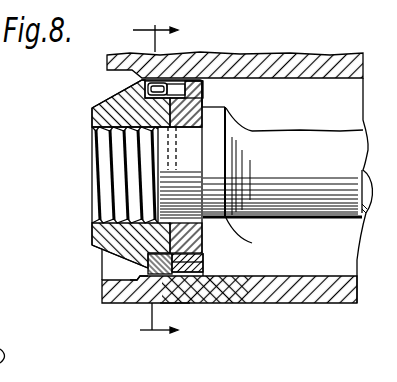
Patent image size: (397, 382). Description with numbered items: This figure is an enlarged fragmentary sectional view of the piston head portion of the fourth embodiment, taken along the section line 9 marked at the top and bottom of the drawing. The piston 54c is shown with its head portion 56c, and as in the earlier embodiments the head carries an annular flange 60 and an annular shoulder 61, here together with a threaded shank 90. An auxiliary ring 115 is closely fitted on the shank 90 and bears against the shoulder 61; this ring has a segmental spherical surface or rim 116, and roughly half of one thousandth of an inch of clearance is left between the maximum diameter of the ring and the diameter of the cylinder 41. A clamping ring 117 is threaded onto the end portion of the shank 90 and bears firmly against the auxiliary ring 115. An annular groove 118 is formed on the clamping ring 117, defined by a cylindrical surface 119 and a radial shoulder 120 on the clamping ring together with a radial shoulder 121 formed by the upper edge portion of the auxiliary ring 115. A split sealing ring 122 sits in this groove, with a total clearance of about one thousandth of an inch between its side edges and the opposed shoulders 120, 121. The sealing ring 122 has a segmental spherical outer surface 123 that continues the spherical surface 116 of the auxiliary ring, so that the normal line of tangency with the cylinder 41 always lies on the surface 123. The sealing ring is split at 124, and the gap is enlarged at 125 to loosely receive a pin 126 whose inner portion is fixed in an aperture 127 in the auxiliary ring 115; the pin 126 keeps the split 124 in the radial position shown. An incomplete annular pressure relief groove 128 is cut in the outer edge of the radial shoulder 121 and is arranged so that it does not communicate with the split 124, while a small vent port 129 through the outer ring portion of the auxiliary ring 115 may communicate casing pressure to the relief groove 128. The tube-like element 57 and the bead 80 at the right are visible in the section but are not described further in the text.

The section line 9 is at (155, 177).
The cylinder 41 is at (333, 278).
The piston 54c is at (324, 94).
The head portion 56c is at (220, 263).
The tube 57 is at (332, 222).
The annular flange 60 is at (234, 121).
The annular shoulder 61 is at (206, 151).
The tube end bead 80 is at (371, 200).
The threaded shank 90 is at (238, 224).
The auxiliary ring 115 is at (202, 277).
The segmental spherical surface 116 is at (200, 268).
The clamping ring 117 is at (108, 233).
The annular groove 118 is at (165, 272).
The cylindrical surface 119 is at (137, 280).
The radial shoulder 120 is at (118, 262).
The radial shoulder 121 is at (175, 281).
The split sealing ring 122 is at (150, 282).
The segmental spherical outer surface 123 is at (148, 76).
The split 124 is at (208, 54).
The enlarged gap 125 is at (160, 64).
The pin 126 is at (256, 56).
The aperture 127 is at (203, 92).
The pressure relief groove 128 is at (199, 279).
The vent port 129 is at (206, 255).